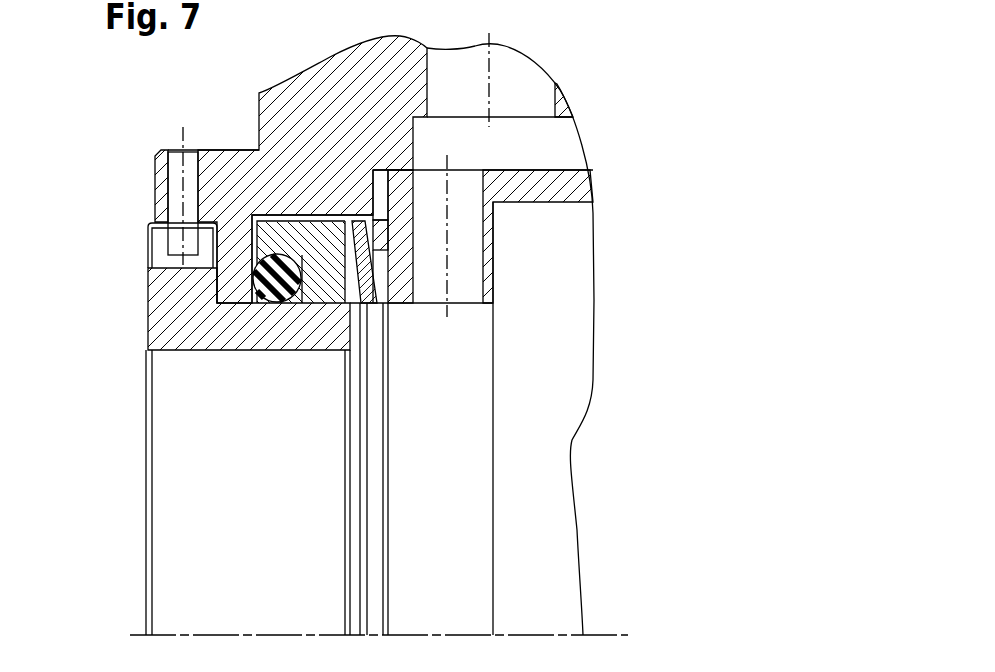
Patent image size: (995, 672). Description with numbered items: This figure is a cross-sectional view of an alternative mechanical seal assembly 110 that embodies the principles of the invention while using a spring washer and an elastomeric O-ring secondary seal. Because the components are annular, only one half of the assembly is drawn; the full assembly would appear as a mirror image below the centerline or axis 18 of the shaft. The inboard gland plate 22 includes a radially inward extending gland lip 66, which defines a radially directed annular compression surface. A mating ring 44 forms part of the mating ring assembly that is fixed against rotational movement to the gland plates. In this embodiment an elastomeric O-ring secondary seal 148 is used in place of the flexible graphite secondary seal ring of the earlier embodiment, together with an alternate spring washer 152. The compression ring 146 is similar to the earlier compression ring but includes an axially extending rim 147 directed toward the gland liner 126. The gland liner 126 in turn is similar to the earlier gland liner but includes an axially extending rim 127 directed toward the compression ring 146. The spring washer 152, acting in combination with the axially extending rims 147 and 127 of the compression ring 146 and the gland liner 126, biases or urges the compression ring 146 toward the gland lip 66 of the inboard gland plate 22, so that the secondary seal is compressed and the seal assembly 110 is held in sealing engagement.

The centerline or axis 18 is at (598, 635).
The inboard gland plate 22 is at (157, 167).
The mating ring 44 is at (160, 303).
The gland lip 66 is at (233, 300).
The alternative mechanical seal assembly 110 is at (527, 47).
The gland liner 126 is at (490, 238).
The axially extending rim 127 is at (383, 218).
The compression ring 146 is at (264, 221).
The axially extending rim 147 is at (360, 272).
The elastomeric O-ring secondary seal 148 is at (277, 303).
The spring washer 152 is at (337, 278).